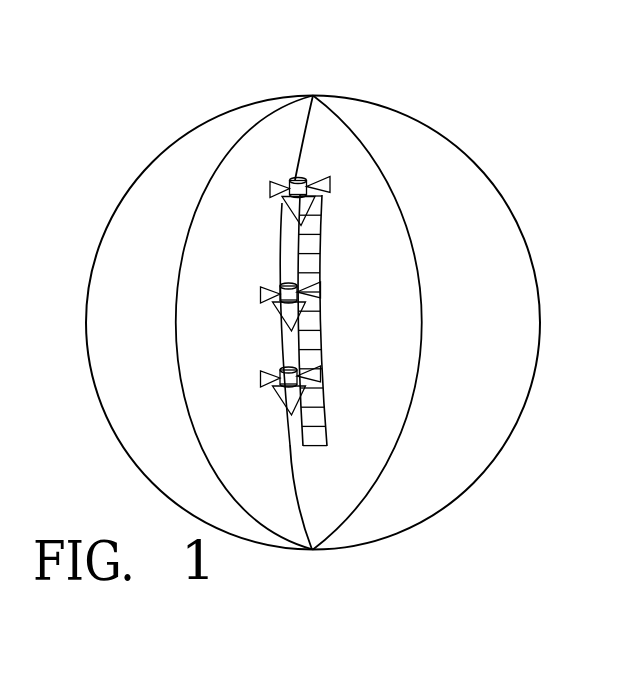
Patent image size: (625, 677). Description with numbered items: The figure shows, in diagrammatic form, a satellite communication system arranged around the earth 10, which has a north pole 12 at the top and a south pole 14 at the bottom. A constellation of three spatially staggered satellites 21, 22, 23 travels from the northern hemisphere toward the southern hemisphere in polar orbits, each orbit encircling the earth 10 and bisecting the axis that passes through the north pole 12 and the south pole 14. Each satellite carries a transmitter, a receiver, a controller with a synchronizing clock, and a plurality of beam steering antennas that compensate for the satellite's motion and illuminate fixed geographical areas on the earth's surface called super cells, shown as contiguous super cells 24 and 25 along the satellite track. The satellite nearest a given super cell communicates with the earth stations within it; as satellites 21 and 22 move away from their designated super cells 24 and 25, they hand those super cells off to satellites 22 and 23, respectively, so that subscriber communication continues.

The earth 10 is at (156, 94).
The north pole 12 is at (320, 84).
The south pole 14 is at (312, 550).
The satellite 21 is at (246, 385).
The satellite 22 is at (239, 296).
The satellite 23 is at (255, 178).
The super cell 24 is at (336, 341).
The super cell 25 is at (338, 250).